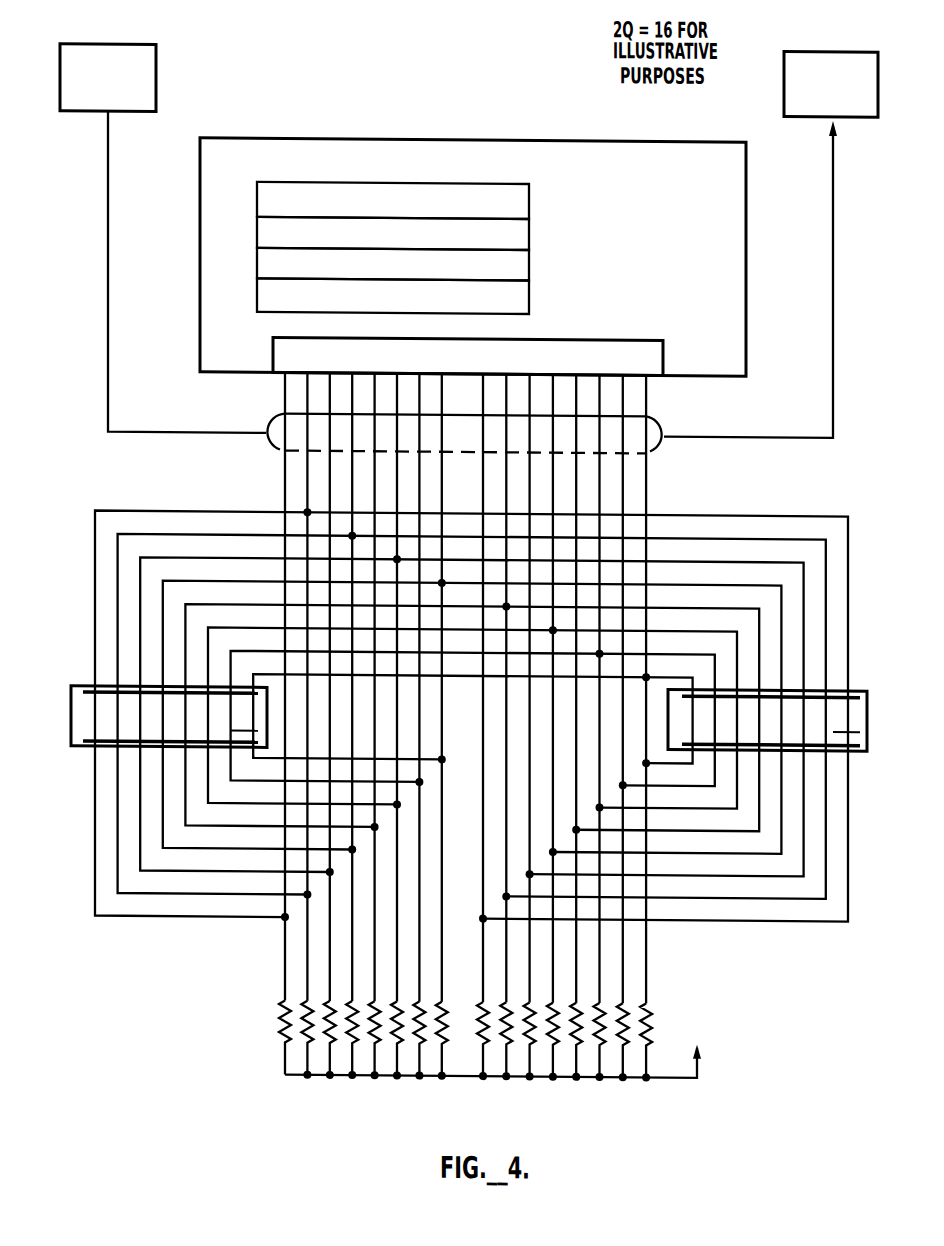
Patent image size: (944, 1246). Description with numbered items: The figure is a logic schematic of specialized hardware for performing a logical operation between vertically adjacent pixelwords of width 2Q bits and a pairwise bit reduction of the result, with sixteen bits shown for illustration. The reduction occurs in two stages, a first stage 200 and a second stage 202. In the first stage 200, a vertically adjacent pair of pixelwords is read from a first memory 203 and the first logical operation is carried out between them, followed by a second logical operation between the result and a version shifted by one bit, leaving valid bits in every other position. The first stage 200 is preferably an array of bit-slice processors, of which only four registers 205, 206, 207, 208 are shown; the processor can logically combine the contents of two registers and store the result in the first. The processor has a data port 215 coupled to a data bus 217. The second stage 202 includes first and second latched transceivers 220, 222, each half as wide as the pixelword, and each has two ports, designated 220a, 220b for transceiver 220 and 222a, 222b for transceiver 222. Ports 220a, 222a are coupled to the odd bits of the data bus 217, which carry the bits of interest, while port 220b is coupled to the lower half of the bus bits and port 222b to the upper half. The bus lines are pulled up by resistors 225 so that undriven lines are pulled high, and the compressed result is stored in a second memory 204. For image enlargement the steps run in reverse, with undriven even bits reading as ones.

The first stage 200 is at (386, 140).
The second stage 202 is at (176, 951).
The first memory 203 is at (157, 73).
The second memory 204 is at (822, 49).
The register 205 is at (531, 200).
The register 206 is at (531, 235).
The register 207 is at (531, 267).
The register 208 is at (531, 298).
The data port 215 is at (645, 341).
The data bus 217 is at (655, 420).
The first latched transceiver 220 is at (157, 720).
The port 220a is at (89, 694).
The port 220b is at (89, 745).
The second latched transceiver 222 is at (778, 721).
The port 222a is at (858, 690).
The port 222b is at (855, 744).
The resistors 225 is at (283, 1027).
The pixelword bit width 2Q is at (102, 295).